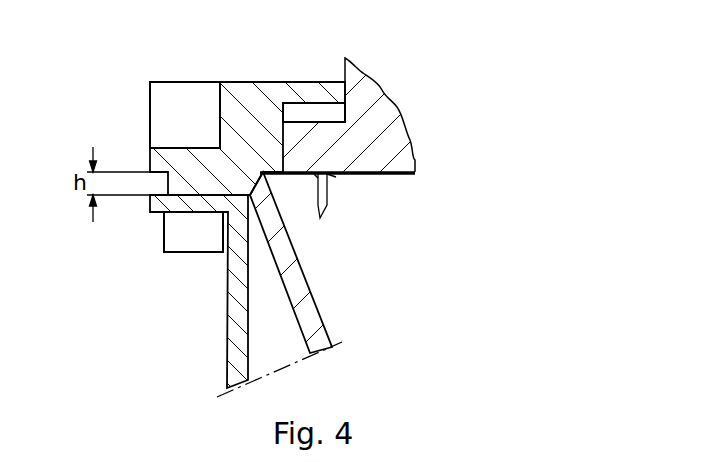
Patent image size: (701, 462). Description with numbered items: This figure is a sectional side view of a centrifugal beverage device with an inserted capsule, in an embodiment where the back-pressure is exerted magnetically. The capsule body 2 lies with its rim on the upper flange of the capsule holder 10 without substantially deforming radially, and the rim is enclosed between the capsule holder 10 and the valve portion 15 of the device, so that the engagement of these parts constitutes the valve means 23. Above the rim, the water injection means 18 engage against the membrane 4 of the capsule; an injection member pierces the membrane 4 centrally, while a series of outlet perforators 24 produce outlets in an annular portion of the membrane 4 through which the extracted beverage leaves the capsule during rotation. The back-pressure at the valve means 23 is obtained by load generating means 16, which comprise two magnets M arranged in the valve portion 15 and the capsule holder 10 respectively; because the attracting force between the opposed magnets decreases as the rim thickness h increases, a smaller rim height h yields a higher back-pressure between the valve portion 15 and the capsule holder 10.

The body 2 is at (298, 278).
The membrane 4 is at (405, 175).
The capsule holder 10 is at (232, 305).
The valve portion 15 is at (255, 92).
The load generating means 16 is at (155, 125).
The water injection means 18 is at (385, 110).
The valve means 23 is at (118, 171).
The outlet perforators 24 is at (328, 193).